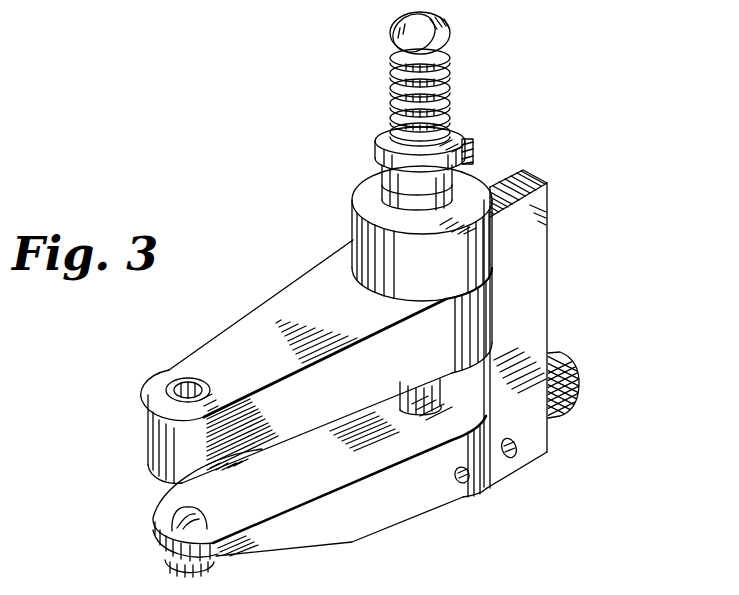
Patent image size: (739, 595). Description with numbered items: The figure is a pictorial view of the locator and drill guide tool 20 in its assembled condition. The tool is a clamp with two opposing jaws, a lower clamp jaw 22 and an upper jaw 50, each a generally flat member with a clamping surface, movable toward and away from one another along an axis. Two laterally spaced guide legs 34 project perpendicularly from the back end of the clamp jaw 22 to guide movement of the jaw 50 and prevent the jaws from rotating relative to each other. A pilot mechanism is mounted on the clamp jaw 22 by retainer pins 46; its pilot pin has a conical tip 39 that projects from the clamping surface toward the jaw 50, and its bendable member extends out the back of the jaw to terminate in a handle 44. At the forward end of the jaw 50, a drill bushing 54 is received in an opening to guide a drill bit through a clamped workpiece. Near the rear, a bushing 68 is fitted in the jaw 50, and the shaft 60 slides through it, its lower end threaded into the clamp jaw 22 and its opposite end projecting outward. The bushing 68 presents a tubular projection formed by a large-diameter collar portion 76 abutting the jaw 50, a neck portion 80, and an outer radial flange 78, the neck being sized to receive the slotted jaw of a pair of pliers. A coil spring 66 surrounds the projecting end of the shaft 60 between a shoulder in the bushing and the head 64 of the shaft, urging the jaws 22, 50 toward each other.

The locator and drill guide tool 20 is at (232, 313).
The clamp jaw 22 is at (382, 528).
The guide leg 34 is at (530, 277).
The conical tip 39 is at (176, 513).
The handle 44 is at (563, 406).
The retainer pin 46 is at (465, 483).
The jaw 50 is at (273, 297).
The drill bushing 54 is at (183, 381).
The shaft 60 is at (402, 418).
The head 64 is at (447, 28).
The coil spring 66 is at (447, 82).
The bushing 68 is at (490, 161).
The collar portion 76 is at (423, 294).
The outer radial flange 78 is at (378, 143).
The neck portion 80 is at (385, 187).